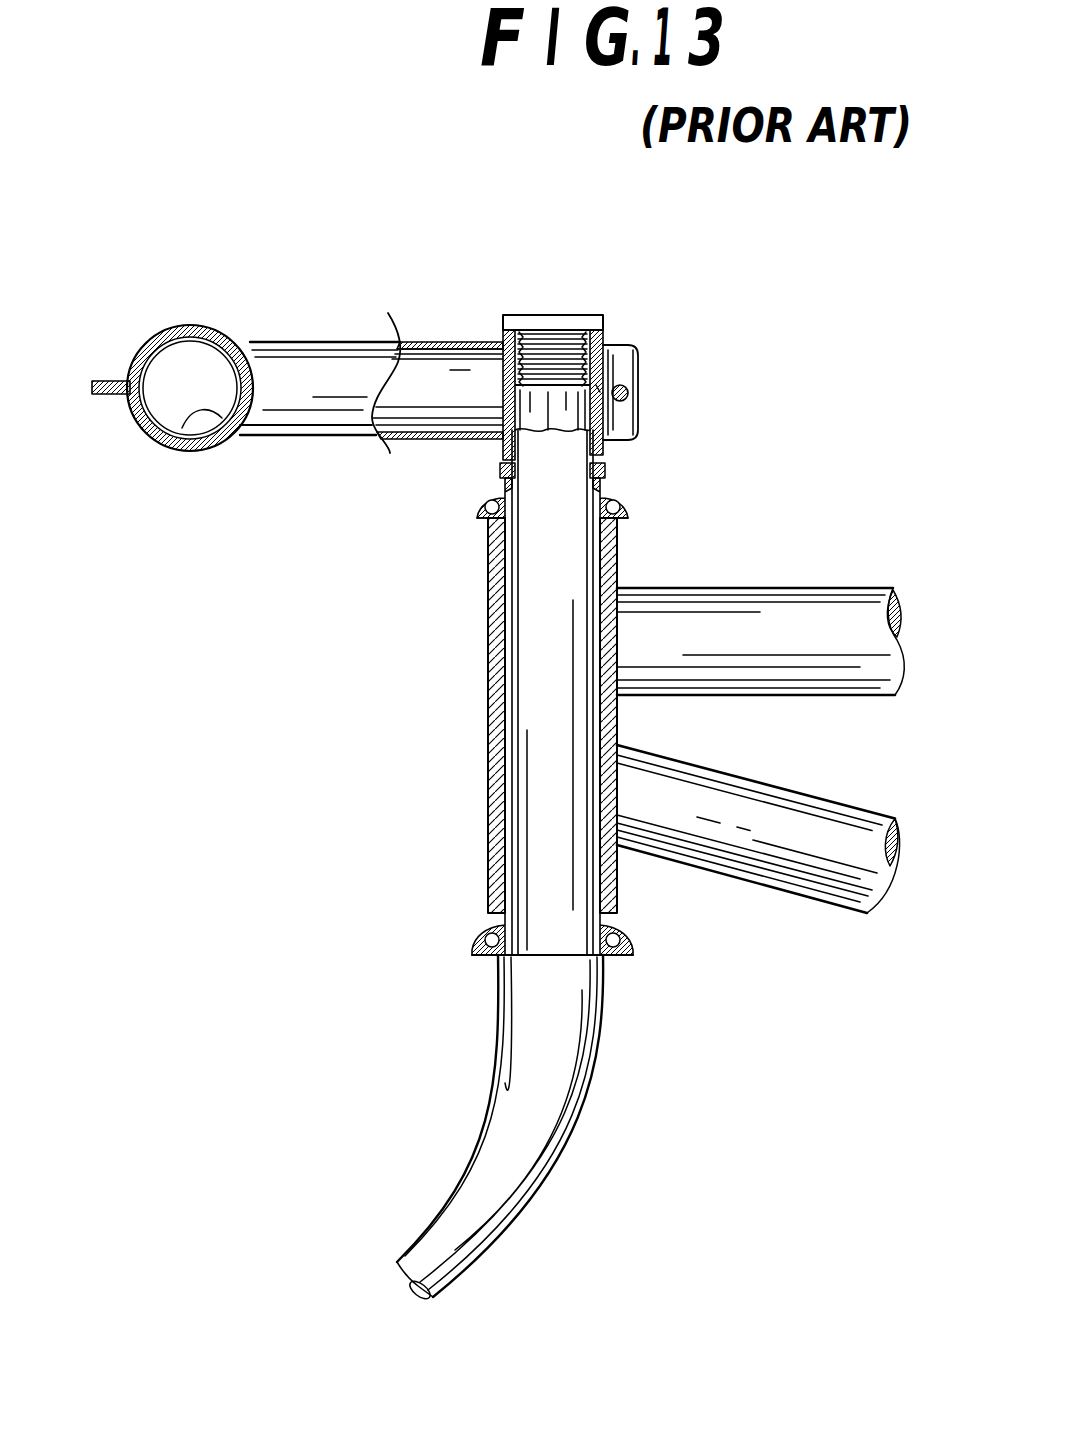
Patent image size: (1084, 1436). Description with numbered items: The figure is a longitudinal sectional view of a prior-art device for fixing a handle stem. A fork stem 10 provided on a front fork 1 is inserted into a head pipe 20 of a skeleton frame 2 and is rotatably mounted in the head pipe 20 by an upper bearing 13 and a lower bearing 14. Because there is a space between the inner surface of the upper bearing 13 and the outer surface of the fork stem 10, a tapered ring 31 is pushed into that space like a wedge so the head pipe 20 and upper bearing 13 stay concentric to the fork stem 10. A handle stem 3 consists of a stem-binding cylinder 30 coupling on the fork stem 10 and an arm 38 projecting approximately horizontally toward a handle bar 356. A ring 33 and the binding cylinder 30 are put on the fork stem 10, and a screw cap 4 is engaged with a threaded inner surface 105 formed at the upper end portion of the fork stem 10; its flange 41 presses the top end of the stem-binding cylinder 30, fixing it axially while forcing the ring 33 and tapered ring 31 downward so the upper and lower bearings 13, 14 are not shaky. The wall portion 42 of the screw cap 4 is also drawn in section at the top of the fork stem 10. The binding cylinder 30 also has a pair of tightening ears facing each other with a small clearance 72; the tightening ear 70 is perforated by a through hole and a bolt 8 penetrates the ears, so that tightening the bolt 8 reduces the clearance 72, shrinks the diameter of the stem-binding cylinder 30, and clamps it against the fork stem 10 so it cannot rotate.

The front fork 1 is at (592, 1040).
The skeleton frame 2 is at (742, 579).
The handle stem 3 is at (337, 328).
The screw cap 4 is at (561, 321).
The bolt 8 is at (629, 396).
The fork stem 10 is at (525, 773).
The upper bearing 13 is at (620, 498).
The lower bearing 14 is at (486, 930).
The head pipe 20 is at (610, 756).
The stem-binding cylinder 30 is at (398, 332).
The tapered ring 31 is at (497, 470).
The ring 33 is at (500, 461).
The arm 38 is at (278, 330).
The flange 41 is at (603, 331).
The cap wall 42 is at (508, 336).
The tightening ear 70 is at (685, 309).
The clearance 72 is at (598, 389).
The threaded inner surface 105 is at (563, 335).
The handle bar 356 is at (222, 418).